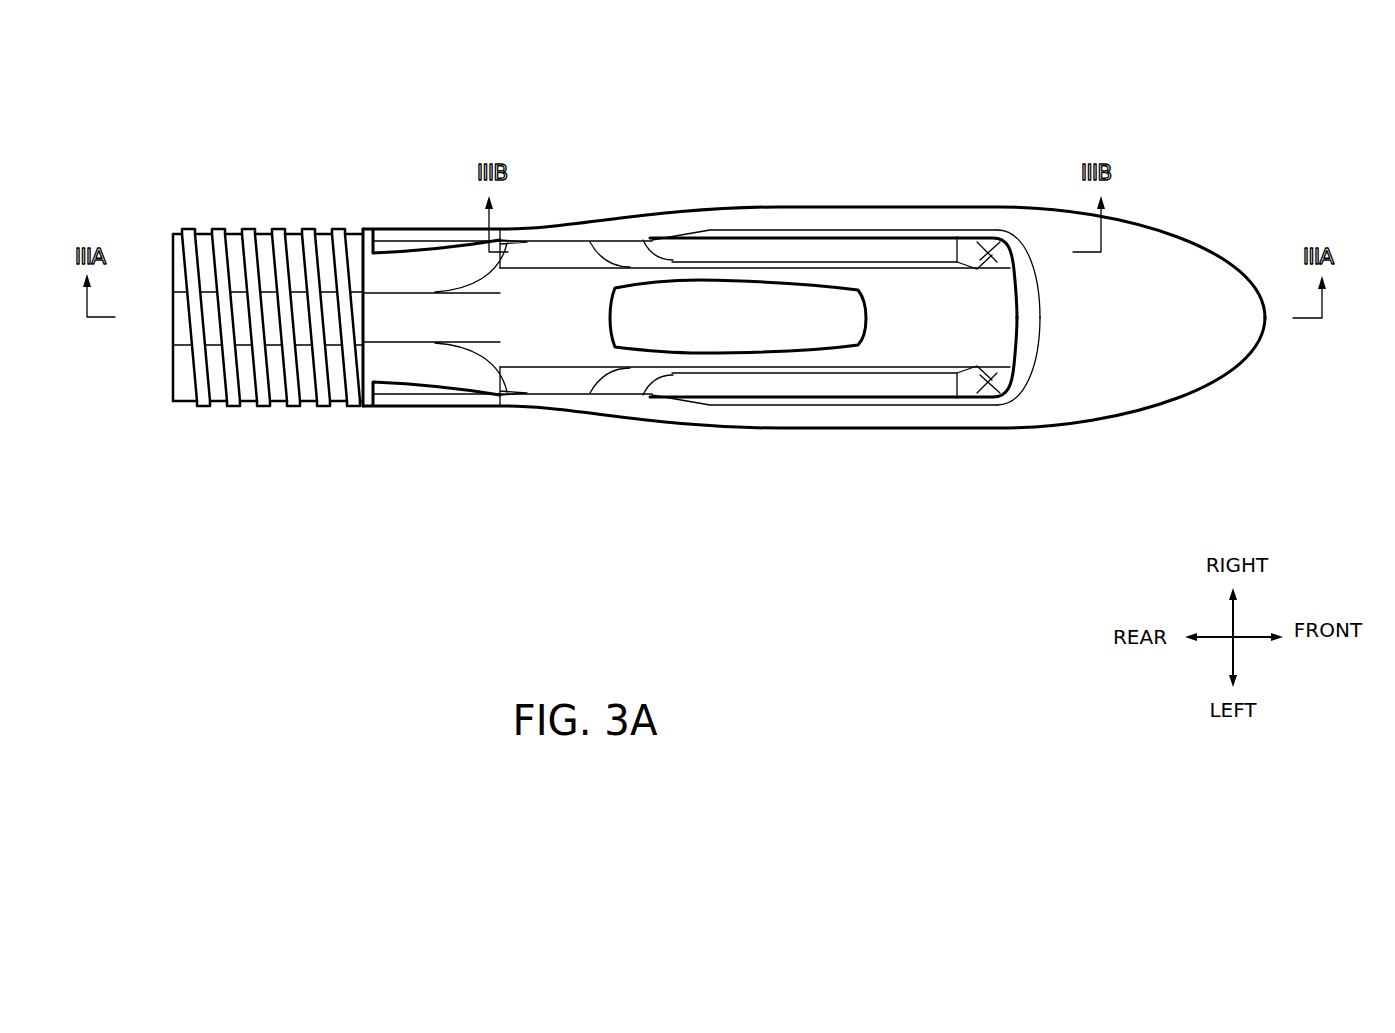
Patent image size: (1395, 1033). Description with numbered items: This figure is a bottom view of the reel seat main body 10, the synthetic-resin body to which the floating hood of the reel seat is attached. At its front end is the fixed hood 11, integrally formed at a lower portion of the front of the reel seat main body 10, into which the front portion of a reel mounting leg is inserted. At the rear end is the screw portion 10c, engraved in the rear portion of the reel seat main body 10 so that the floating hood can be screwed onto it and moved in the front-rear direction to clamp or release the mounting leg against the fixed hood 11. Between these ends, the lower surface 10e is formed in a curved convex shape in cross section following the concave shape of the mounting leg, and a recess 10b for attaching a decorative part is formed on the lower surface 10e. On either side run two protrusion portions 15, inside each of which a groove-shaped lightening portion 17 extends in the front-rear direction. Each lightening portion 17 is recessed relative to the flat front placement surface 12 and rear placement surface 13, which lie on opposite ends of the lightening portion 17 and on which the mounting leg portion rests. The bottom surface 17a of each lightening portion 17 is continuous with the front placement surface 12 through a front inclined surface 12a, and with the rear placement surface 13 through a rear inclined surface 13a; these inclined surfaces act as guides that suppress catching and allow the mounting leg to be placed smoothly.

The reel seat main body 10 is at (1077, 102).
The recess 10b is at (706, 337).
The screw portion 10c is at (307, 256).
The lower surface 10e is at (912, 343).
The fixed hood 11 is at (1115, 278).
The front placement surface 12 is at (985, 258).
The front inclined surface 12a is at (967, 250).
The rear placement surface 13 is at (573, 257).
The rear inclined surface 13a is at (630, 252).
The protrusion portion 15 is at (887, 212).
The lightening portion 17 is at (750, 238).
The bottom surface 17a is at (812, 248).